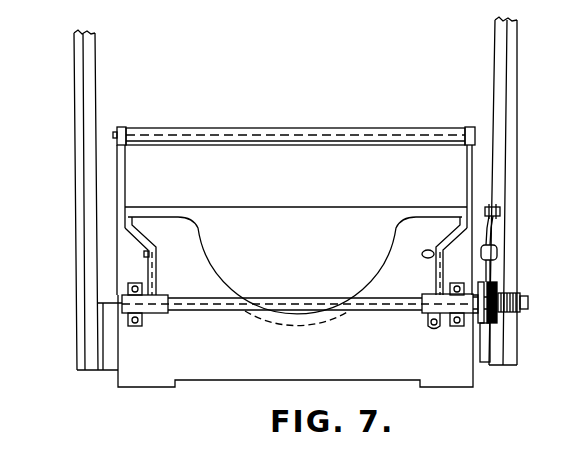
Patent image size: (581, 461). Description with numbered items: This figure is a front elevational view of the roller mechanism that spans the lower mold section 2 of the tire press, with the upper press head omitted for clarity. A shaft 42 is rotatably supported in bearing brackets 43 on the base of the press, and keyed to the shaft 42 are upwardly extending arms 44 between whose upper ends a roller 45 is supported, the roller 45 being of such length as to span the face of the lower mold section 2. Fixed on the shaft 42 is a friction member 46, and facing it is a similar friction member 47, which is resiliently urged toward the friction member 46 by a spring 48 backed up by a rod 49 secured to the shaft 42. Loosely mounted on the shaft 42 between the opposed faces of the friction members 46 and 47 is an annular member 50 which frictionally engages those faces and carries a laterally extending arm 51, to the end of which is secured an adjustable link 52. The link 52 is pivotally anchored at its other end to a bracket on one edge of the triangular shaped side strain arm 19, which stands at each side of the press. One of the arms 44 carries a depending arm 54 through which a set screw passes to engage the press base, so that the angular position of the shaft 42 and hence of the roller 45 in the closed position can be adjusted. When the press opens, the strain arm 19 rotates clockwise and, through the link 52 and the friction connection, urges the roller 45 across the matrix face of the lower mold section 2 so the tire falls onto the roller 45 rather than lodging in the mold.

The main strain arm 19 is at (80, 147).
The lower mold section 2 is at (285, 266).
The roller 45 is at (245, 134).
The upwardly extending arms 44 is at (157, 270).
The shaft 42 is at (210, 312).
The bearing brackets 43 is at (131, 310).
The depending arm 54 is at (430, 322).
The friction member 46 is at (473, 318).
The spring 48 is at (503, 292).
The friction member 47 is at (498, 316).
The rod 49 is at (529, 300).
The annular member 50 is at (486, 363).
The laterally extending arm 51 is at (489, 267).
The adjustable link 52 is at (491, 228).